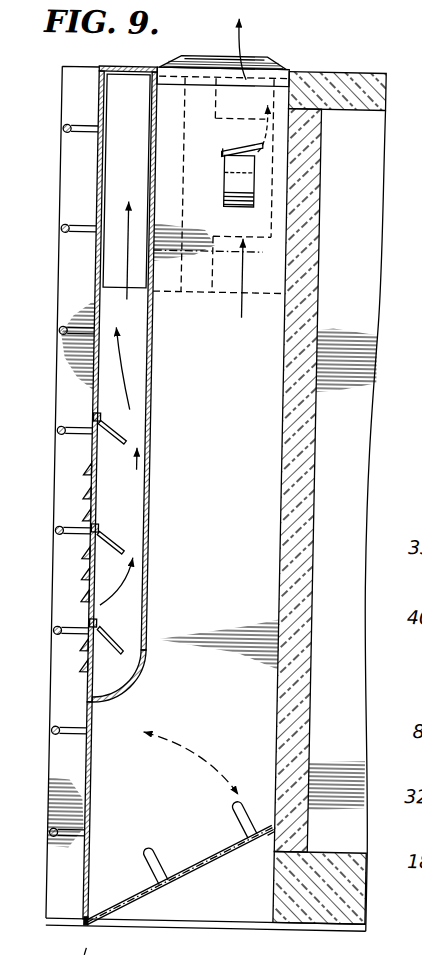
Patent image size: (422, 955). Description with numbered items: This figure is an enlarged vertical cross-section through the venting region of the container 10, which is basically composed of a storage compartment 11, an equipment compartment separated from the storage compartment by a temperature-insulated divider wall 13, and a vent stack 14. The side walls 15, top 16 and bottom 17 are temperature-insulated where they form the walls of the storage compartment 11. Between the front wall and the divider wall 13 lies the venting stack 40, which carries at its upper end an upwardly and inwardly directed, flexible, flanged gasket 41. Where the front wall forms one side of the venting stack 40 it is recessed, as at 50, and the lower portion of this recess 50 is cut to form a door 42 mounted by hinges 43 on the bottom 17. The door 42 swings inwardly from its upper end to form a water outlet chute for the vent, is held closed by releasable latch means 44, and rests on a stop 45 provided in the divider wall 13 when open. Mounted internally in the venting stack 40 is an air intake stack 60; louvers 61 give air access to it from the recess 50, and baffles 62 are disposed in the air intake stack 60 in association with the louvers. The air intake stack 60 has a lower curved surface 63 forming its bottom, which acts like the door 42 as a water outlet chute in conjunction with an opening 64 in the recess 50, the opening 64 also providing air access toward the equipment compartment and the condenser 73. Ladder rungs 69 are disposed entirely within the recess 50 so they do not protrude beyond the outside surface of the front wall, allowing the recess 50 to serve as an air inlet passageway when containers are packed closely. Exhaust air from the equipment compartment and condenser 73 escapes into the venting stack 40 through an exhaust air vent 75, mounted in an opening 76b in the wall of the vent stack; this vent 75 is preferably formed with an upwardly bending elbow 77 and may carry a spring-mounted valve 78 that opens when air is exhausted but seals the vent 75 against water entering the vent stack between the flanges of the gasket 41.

The container 10 is at (343, 62).
The storage compartment 11 is at (357, 342).
The divider wall 13 is at (315, 410).
The vent stack 14 is at (258, 539).
The side walls 15 is at (358, 252).
The top 16 is at (369, 93).
The bottom 17 is at (361, 885).
The venting stack 40 is at (198, 356).
The flanged gasket 41 is at (236, 82).
The door 42 is at (94, 789).
The hinges 43 is at (92, 926).
The releasable latch means 44 is at (97, 715).
The stop 45 is at (274, 836).
The recess 50 is at (60, 100).
The air intake stack 60 is at (141, 398).
The louvers 61 is at (88, 517).
The baffles 62 is at (130, 438).
The lower curved surface 63 is at (137, 684).
The opening 64 is at (100, 166).
The ladder rungs 69 is at (61, 231).
The condenser 73 is at (220, 205).
The exhaust air vent 75 is at (215, 191).
The opening 76b is at (240, 177).
The upwardly bending elbow 77 is at (238, 159).
The spring-mounted valve 78 is at (214, 156).